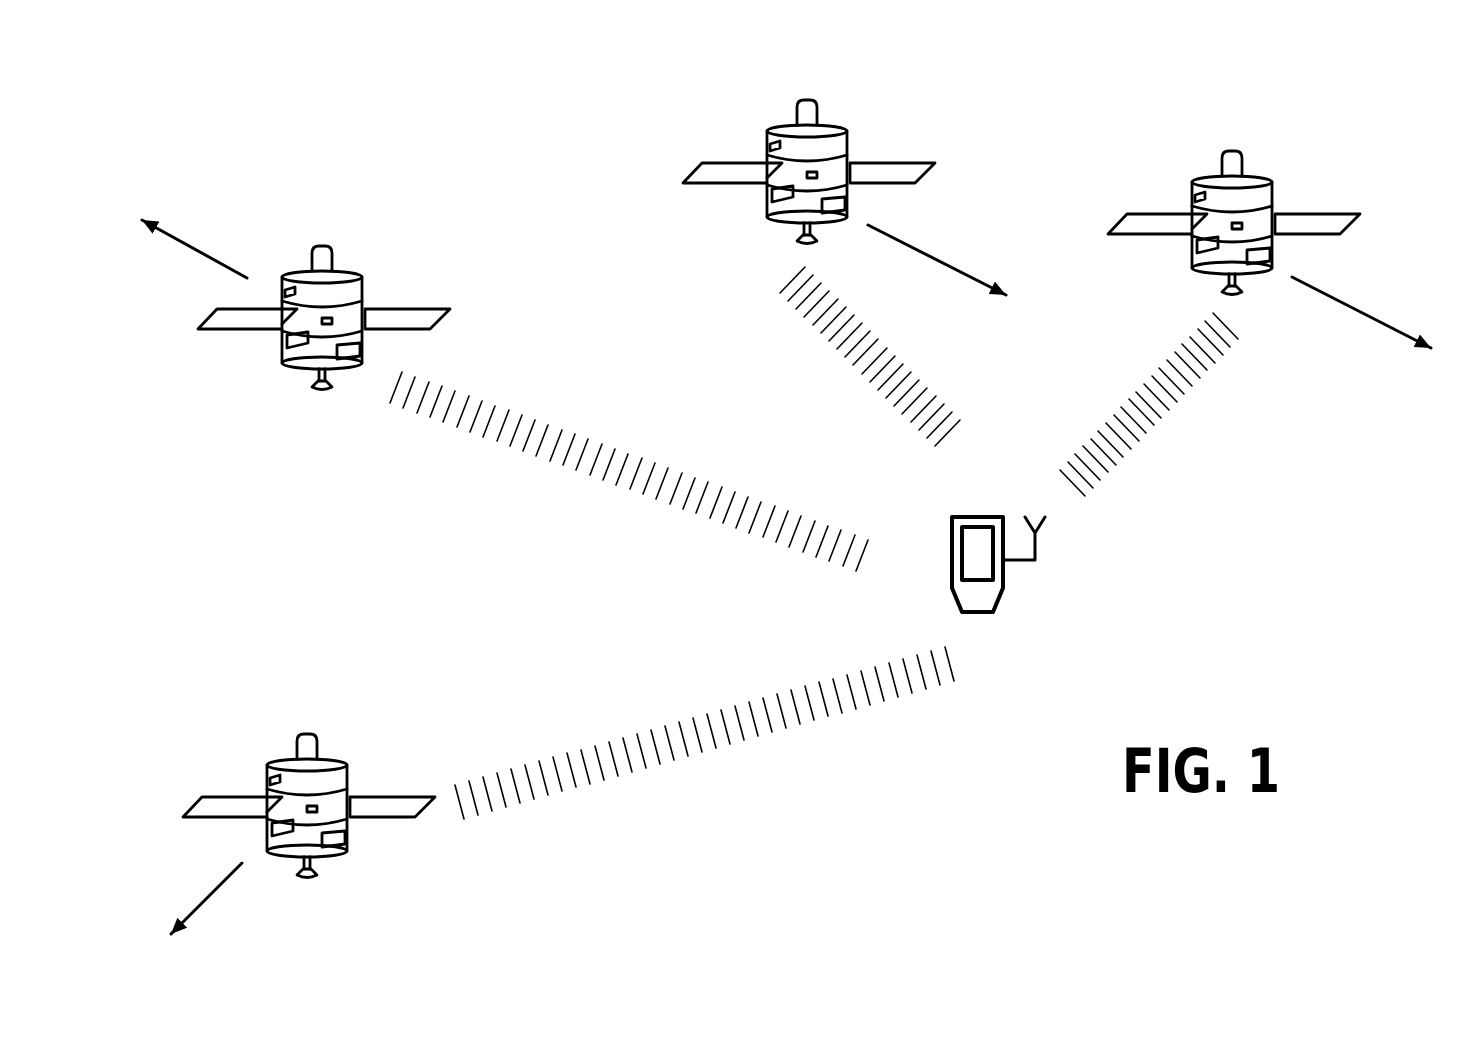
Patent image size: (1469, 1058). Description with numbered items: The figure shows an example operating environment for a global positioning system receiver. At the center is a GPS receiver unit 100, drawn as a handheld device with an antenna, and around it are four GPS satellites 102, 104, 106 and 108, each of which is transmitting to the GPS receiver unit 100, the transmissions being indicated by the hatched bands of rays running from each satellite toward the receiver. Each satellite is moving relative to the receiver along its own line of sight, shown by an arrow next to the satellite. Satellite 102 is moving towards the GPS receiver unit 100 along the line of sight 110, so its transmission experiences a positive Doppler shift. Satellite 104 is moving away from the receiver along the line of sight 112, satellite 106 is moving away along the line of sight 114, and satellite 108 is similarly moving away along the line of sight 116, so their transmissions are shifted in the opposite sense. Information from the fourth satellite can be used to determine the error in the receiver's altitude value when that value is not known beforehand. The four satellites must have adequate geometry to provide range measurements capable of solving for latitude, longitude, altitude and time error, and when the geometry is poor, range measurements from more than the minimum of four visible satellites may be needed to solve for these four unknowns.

The GPS receiver unit 100 is at (985, 612).
The GPS satellite 102 is at (307, 732).
The GPS satellite 104 is at (322, 242).
The GPS satellite 106 is at (907, 160).
The GPS satellite 108 is at (1153, 214).
The line of sight (LOS) 110 is at (222, 880).
The line of sight (LOS) 112 is at (197, 253).
The line of sight (LOS) 114 is at (935, 253).
The line of sight (LOS) 116 is at (1360, 308).